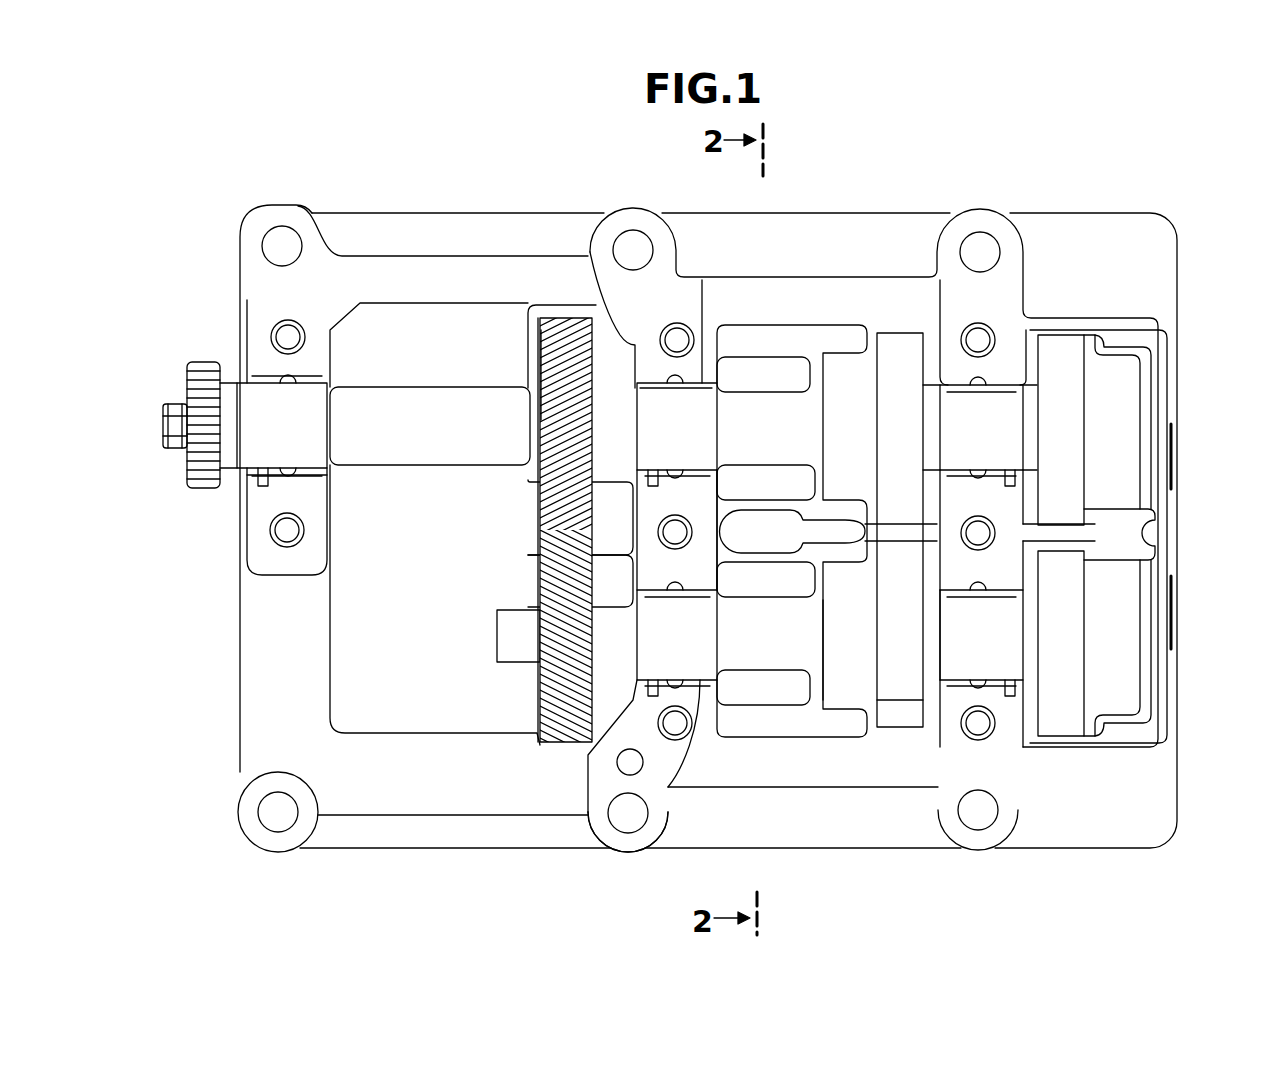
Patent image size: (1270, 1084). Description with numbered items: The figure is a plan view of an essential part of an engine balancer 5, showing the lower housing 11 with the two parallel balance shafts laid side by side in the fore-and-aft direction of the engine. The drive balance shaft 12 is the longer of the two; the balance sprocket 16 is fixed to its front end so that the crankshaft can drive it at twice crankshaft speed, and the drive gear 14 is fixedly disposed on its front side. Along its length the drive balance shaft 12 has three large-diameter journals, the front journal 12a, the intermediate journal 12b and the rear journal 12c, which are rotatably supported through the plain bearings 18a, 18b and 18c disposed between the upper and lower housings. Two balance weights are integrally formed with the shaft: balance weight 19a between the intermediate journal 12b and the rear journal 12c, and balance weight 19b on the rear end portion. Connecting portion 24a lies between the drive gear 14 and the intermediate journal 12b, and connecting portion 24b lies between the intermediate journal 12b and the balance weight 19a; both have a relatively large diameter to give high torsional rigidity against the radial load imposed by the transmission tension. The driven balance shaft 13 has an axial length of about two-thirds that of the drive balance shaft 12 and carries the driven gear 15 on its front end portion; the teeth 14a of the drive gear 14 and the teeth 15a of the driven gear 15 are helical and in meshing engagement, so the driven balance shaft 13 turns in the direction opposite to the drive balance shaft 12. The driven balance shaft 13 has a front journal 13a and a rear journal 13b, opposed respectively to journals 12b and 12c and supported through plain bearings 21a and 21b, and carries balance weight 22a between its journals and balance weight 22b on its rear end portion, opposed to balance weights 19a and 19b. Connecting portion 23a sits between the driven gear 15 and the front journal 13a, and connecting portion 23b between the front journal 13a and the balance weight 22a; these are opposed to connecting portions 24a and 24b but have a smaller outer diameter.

The engine balancer 5 is at (966, 184).
The lower housing 11 is at (410, 800).
The drive balance shaft 12 is at (440, 387).
The journal 12a is at (310, 430).
The journal 12b is at (707, 420).
The journal 12c is at (1003, 428).
The driven balance shaft 13 is at (614, 666).
The journal 13a is at (728, 690).
The journal 13b is at (1000, 633).
The drive gear 14 is at (566, 375).
The teeth 14a is at (568, 378).
The driven gear 15 is at (558, 745).
The teeth 15a is at (552, 692).
The balance sprocket 16 is at (203, 362).
The plain bearing 18a is at (265, 378).
The plain bearing 18b is at (700, 377).
The plain bearing 18c is at (1003, 377).
The balance weight 19a is at (900, 350).
The balance weight 19b is at (1057, 378).
The plain bearing 21a is at (697, 650).
The plain bearing 21b is at (940, 745).
The balance weight 22a is at (897, 716).
The balance weight 22b is at (1062, 578).
The connecting portion 23a is at (617, 617).
The connecting portion 23b is at (780, 652).
The connecting portion 24a is at (612, 400).
The connecting portion 24b is at (783, 413).